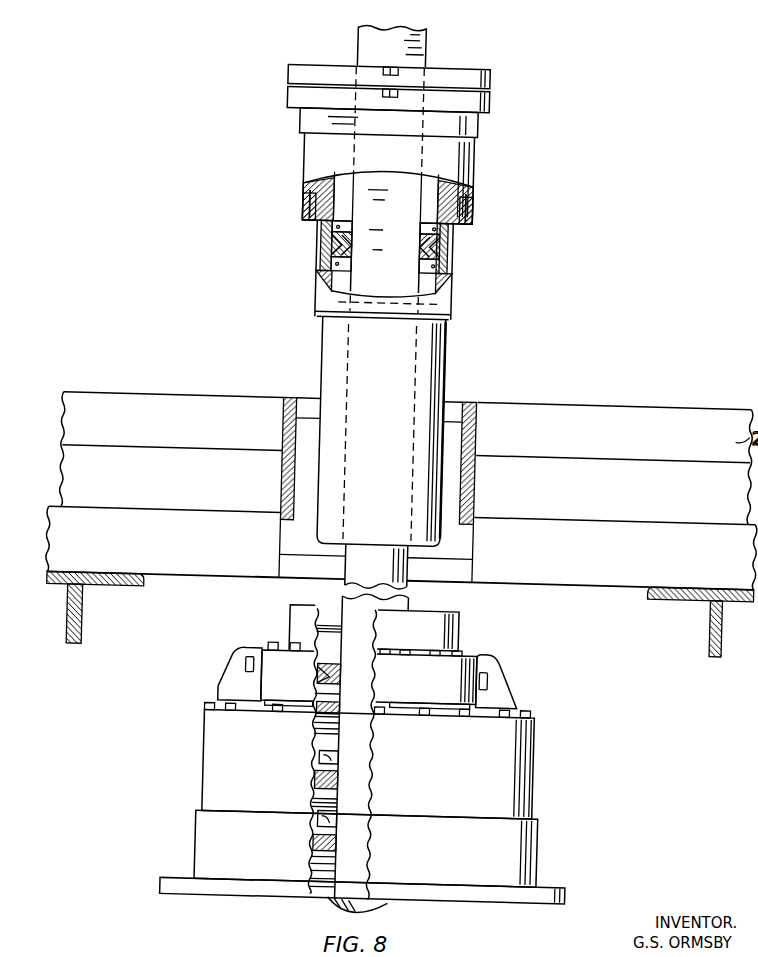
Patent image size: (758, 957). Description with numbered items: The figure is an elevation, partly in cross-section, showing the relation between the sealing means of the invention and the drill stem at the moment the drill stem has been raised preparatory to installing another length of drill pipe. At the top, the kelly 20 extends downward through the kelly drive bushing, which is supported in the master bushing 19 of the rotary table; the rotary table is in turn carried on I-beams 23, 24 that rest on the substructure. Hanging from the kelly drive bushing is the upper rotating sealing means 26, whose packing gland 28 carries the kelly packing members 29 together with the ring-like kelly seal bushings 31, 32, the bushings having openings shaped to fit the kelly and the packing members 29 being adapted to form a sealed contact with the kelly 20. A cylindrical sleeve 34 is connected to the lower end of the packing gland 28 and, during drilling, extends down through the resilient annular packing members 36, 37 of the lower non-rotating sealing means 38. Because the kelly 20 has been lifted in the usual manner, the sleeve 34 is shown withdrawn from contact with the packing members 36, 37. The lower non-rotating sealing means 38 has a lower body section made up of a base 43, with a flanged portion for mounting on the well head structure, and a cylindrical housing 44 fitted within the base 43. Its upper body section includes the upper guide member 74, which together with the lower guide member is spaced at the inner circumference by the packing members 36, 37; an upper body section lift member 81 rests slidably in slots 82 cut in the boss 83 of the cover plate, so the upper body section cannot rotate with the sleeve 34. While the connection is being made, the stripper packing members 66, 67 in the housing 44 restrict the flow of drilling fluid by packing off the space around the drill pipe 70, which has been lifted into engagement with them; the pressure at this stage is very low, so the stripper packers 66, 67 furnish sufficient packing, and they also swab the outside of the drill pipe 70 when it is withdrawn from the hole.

The master bushing 19 is at (478, 499).
The kelly 20 is at (425, 43).
The I-beam 23 is at (726, 636).
The I-beam 24 is at (71, 639).
The upper rotating sealing means 26 is at (298, 250).
The packing gland 28 is at (448, 244).
The kelly packing member 29 is at (346, 242).
The kelly seal bushing 31 is at (345, 265).
The kelly seal bushing 32 is at (346, 218).
The cylindrical sleeve 34 is at (434, 385).
The resilient annular packing member 36 is at (342, 674).
The resilient annular packing member 37 is at (339, 718).
The lower non-rotating sealing means 38 is at (193, 738).
The base 43 is at (539, 848).
The cylindrical housing 44 is at (525, 756).
The stripper packing member 66 is at (345, 823).
The stripper packing member 67 is at (338, 756).
The drill pipe 70 is at (348, 584).
The upper guide member 74 is at (293, 622).
The upper body section lift member 81 is at (522, 693).
The slot 82 is at (453, 700).
The boss 83 is at (505, 690).